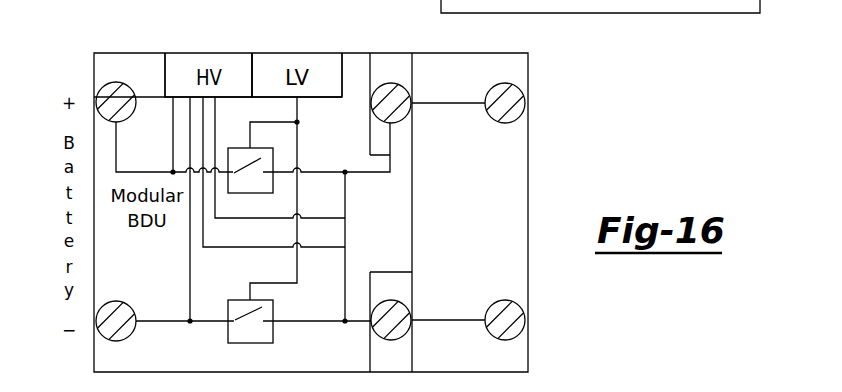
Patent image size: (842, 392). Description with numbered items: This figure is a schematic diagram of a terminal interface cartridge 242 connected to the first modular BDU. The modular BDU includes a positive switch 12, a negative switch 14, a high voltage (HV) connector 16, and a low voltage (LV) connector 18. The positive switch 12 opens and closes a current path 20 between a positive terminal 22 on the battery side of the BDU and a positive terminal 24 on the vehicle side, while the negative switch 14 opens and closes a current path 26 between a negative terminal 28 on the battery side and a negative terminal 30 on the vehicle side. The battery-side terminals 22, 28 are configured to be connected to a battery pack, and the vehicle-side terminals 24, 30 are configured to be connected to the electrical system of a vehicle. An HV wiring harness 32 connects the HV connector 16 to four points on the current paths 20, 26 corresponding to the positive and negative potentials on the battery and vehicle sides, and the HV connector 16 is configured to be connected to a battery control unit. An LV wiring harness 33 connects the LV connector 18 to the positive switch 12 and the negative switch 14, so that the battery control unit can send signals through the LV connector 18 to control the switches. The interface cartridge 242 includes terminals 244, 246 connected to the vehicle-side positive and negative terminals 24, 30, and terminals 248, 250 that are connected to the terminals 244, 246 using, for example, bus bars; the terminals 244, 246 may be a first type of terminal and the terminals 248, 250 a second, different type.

The positive switch 12 is at (242, 148).
The negative switch 14 is at (227, 333).
The high voltage (HV) connector 16 is at (165, 72).
The low voltage (LV) connector 18 is at (342, 72).
The current path 20 is at (115, 152).
The positive terminal 22 is at (107, 98).
The positive terminal 24 is at (380, 112).
The current path 26 is at (163, 321).
The negative terminal 28 is at (98, 332).
The negative terminal 30 is at (380, 335).
The high voltage (HV) wiring harness 32 is at (166, 105).
The low voltage (LV) wiring harness 33 is at (338, 104).
The terminal interface cartridge 242 is at (540, 62).
The terminal 244 is at (409, 104).
The terminal 246 is at (409, 322).
The terminal 248 is at (520, 107).
The terminal 250 is at (520, 323).